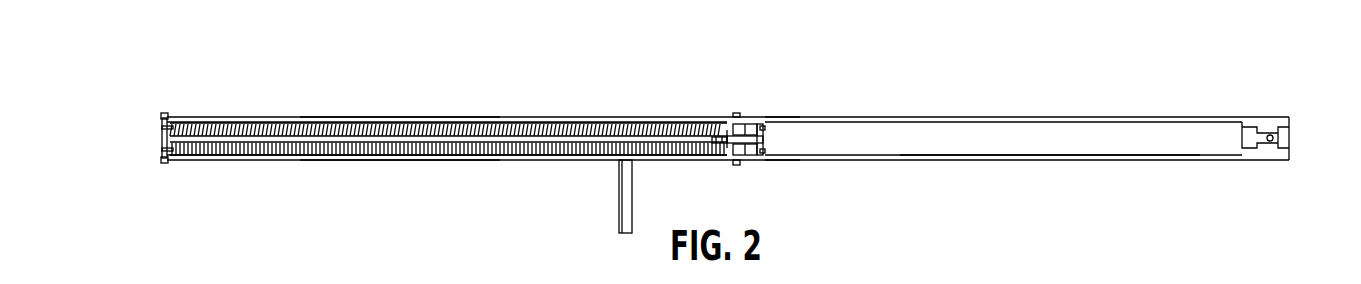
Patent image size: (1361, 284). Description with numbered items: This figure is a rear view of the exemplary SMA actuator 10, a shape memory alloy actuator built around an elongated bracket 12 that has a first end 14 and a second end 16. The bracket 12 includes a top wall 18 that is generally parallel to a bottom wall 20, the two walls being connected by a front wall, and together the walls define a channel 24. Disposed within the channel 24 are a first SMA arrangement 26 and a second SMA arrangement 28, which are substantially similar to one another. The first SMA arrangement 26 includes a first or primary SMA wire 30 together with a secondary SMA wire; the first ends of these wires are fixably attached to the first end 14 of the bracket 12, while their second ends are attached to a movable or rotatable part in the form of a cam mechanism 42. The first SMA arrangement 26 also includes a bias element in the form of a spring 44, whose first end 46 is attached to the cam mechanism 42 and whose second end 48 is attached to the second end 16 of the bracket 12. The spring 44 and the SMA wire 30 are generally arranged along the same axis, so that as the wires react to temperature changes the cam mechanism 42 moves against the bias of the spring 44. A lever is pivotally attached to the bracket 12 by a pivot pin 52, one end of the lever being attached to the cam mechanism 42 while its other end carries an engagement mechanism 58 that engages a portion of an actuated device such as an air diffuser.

The SMA actuator 10 is at (1193, 72).
The bracket 12 is at (210, 117).
The first end 14 is at (1290, 138).
The second end 16 is at (161, 140).
The top wall 18 is at (385, 117).
The bottom wall 20 is at (385, 160).
The channel 24 is at (1045, 143).
The first SMA arrangement 26 is at (788, 98).
The second SMA arrangement 28 is at (780, 184).
The first SMA wire 30 is at (925, 117).
The cam mechanism 42 is at (753, 126).
The spring 44 is at (605, 141).
The first end 46 is at (721, 143).
The second end 48 is at (183, 121).
The pivot pin 52 is at (735, 167).
The engagement mechanism 58 is at (626, 222).